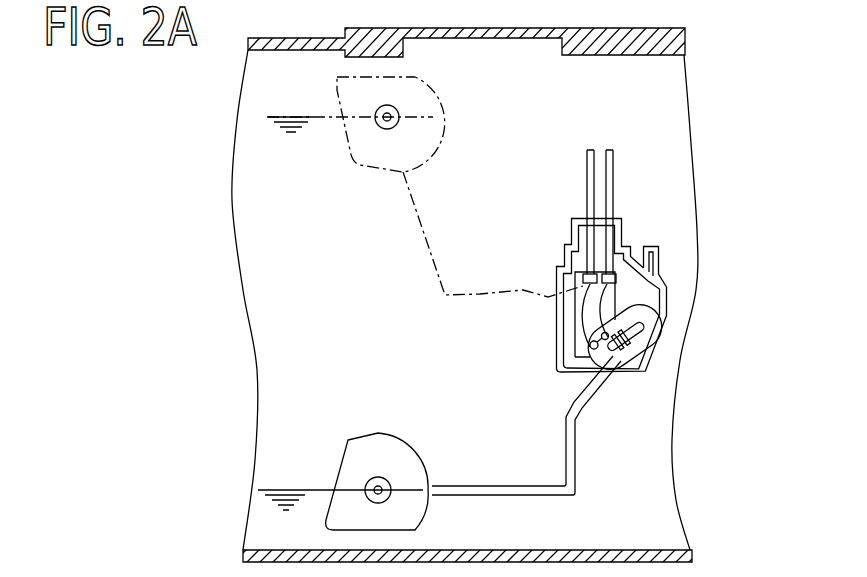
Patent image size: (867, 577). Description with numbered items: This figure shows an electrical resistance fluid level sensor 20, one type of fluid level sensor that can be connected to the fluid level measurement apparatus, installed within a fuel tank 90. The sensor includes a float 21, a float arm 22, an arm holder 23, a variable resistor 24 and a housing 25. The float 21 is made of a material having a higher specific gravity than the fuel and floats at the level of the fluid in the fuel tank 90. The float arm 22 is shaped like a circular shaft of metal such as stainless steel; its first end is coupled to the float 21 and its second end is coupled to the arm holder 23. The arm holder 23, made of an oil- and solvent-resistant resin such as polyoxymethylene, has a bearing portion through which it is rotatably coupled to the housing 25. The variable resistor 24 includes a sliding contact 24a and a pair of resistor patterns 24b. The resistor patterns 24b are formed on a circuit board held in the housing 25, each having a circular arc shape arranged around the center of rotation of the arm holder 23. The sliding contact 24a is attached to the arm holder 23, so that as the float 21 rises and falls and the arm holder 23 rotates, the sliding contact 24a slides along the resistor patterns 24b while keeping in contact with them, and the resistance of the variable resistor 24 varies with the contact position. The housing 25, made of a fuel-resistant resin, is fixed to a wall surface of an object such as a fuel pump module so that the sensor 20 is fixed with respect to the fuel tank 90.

The electrical resistance fluid level sensor 20 is at (616, 218).
The float 21 is at (363, 446).
The float arm 22 is at (498, 488).
The arm holder 23 is at (645, 327).
The variable resistor 24 is at (507, 330).
The sliding contact 24a is at (557, 352).
The resistor patterns 24b is at (583, 322).
The housing 25 is at (662, 298).
The fuel tank 90 is at (624, 550).